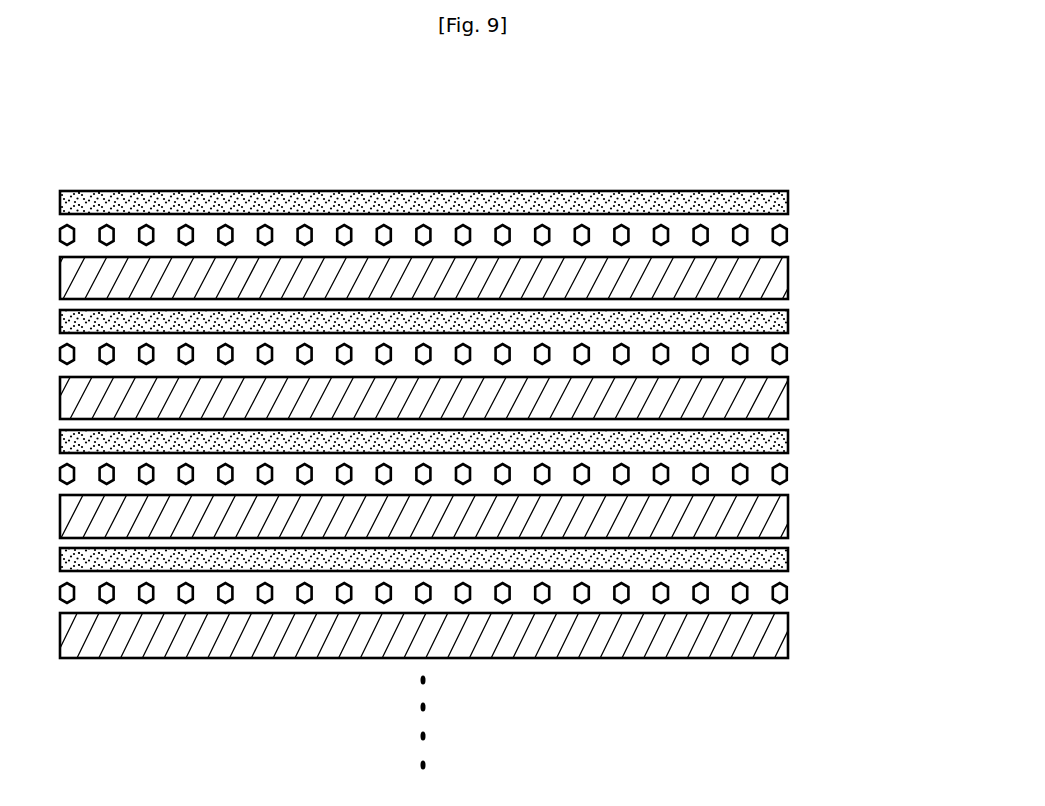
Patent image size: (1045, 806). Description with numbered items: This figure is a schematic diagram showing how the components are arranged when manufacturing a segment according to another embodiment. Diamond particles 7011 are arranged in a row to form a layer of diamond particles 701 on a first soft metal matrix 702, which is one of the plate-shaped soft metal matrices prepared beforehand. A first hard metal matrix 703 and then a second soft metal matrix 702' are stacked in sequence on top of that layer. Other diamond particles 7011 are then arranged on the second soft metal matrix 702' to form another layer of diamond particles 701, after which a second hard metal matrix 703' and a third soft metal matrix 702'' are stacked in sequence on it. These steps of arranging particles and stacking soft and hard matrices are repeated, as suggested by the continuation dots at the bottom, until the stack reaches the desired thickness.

The layer of diamond particles 701 is at (472, 171).
The diamond particles 7011 is at (542, 225).
The first soft metal matrix 702 is at (467, 182).
The second soft metal matrix 702' is at (470, 348).
The third soft metal matrix 702'' is at (475, 476).
The first hard metal matrix 703 is at (466, 297).
The second hard metal matrix 703' is at (470, 410).